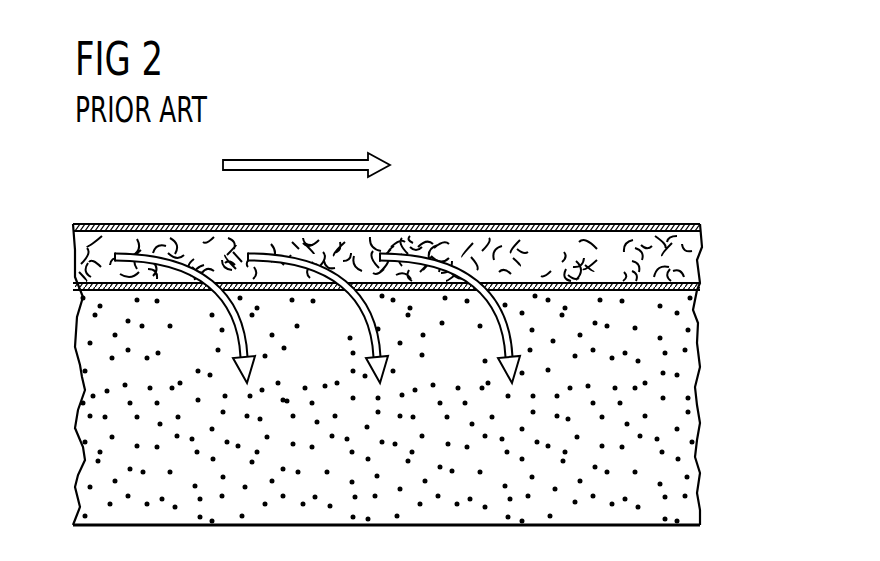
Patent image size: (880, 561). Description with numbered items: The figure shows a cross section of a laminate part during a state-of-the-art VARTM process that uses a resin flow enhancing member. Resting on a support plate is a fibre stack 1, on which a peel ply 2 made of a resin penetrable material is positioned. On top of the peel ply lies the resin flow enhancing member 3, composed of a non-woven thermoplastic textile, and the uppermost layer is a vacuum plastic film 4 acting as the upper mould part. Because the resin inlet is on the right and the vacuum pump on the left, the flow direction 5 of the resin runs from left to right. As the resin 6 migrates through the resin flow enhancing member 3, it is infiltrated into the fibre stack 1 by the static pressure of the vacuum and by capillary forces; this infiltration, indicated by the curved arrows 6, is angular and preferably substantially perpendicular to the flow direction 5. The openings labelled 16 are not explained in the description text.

The fibre stack 1 is at (683, 430).
The peel ply 2 is at (673, 290).
The resin flow enhancing member 3 is at (700, 258).
The vacuum plastic film 4 is at (592, 224).
The flow direction 5 is at (291, 158).
The resin 6 is at (176, 262).
The openings in lower layer 16 is at (203, 297).